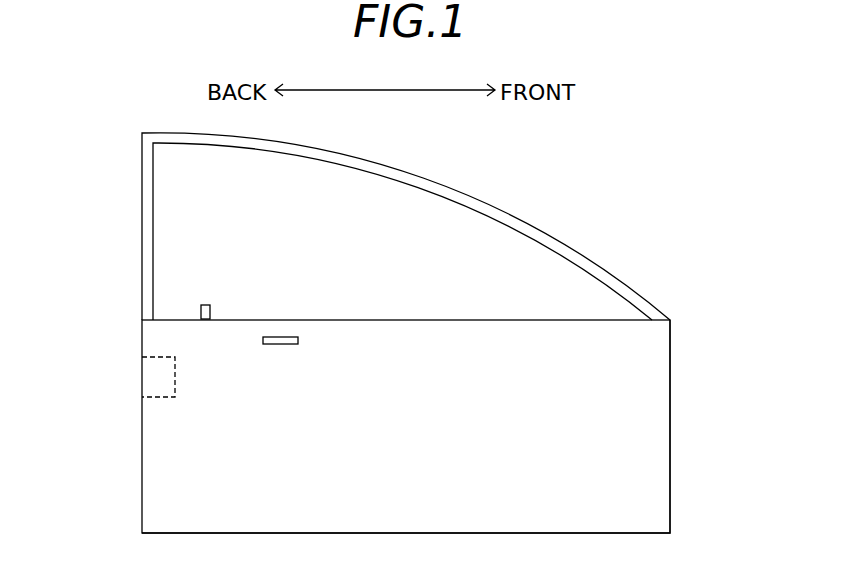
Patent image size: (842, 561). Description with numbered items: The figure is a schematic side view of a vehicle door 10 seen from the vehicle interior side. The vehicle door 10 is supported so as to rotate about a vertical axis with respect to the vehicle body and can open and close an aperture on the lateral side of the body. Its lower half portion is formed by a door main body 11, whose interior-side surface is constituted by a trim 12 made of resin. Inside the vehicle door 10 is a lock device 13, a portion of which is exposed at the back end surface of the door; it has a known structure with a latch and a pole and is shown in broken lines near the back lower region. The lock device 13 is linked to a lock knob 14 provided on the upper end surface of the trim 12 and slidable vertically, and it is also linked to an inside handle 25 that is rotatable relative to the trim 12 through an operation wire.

The vehicle door 10 is at (95, 244).
The door main body 11 is at (663, 400).
The trim 12 is at (657, 488).
The lock device 13 is at (162, 397).
The lock knob 14 is at (212, 311).
The inside handle 25 is at (298, 341).